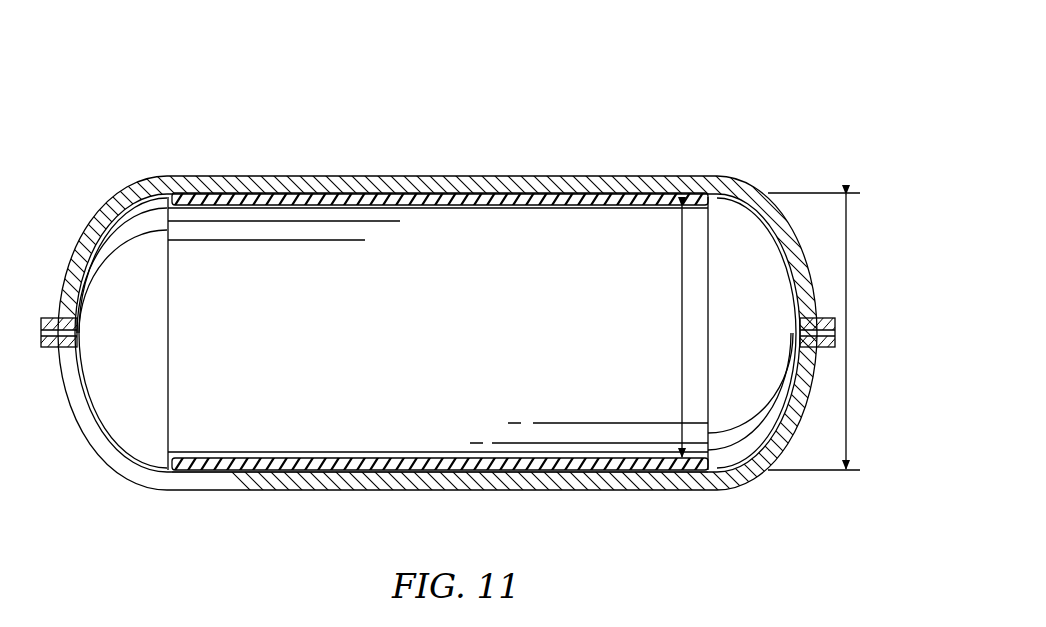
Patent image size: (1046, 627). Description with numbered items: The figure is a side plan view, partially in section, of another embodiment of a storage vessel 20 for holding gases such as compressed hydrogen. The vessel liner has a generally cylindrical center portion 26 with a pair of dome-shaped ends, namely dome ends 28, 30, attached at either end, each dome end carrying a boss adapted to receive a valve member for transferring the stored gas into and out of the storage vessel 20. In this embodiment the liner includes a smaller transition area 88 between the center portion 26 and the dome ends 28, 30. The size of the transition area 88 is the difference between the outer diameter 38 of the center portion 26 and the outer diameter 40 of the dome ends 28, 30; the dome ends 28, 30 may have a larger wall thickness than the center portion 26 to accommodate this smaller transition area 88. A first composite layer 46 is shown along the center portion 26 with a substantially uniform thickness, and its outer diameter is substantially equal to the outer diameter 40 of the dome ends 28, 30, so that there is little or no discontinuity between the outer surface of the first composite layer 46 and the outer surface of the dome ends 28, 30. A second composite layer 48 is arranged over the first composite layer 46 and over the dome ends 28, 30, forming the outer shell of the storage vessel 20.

The storage vessel 20 is at (176, 137).
The center portion 26 is at (356, 344).
The dome end 28 is at (748, 434).
The dome end 30 is at (130, 432).
The outer diameter of the center portion 38 is at (680, 330).
The outer diameter of the dome ends 40 is at (848, 305).
The first composite layer 46 is at (375, 196).
The second composite layer 48 is at (400, 490).
The transition area 88 is at (187, 196).